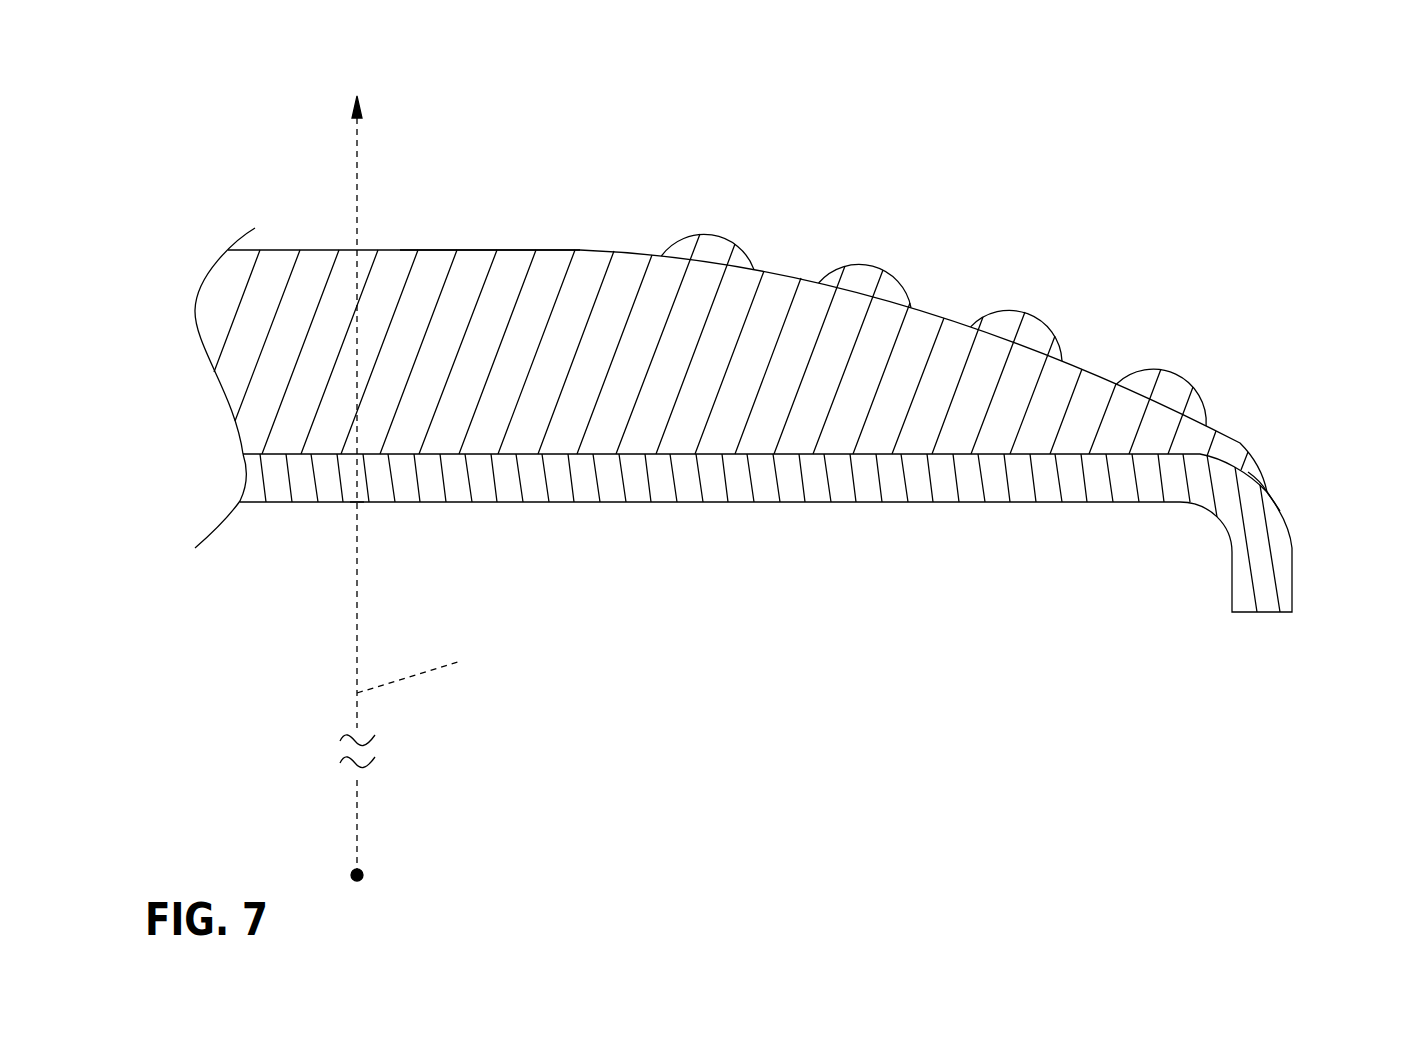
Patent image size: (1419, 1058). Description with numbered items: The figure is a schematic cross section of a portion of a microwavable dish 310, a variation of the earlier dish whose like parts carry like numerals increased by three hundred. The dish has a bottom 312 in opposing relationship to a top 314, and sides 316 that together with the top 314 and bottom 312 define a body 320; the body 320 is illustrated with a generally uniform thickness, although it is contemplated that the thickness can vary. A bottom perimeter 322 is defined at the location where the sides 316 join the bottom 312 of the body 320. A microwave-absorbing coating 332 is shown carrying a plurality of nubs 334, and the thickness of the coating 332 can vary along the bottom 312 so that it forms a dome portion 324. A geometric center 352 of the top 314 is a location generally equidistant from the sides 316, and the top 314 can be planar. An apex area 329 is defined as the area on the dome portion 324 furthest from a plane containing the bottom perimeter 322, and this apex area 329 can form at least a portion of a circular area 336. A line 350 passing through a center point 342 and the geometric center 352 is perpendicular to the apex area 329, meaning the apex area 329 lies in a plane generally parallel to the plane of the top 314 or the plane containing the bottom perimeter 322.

The microwavable dish 310 is at (792, 366).
The bottom 312 is at (792, 491).
The top 314 is at (1076, 503).
The sides 316 is at (1292, 557).
The body 320 is at (1259, 571).
The bottom perimeter 322 is at (1267, 492).
The dome portion 324 is at (731, 298).
The apex area 329 is at (522, 250).
The microwave-absorbing coating 332 is at (790, 277).
The nubs 334 is at (728, 237).
The circular area 336 is at (403, 249).
The center point 342 is at (363, 873).
The line 350 is at (420, 483).
The geometric center 352 is at (357, 503).